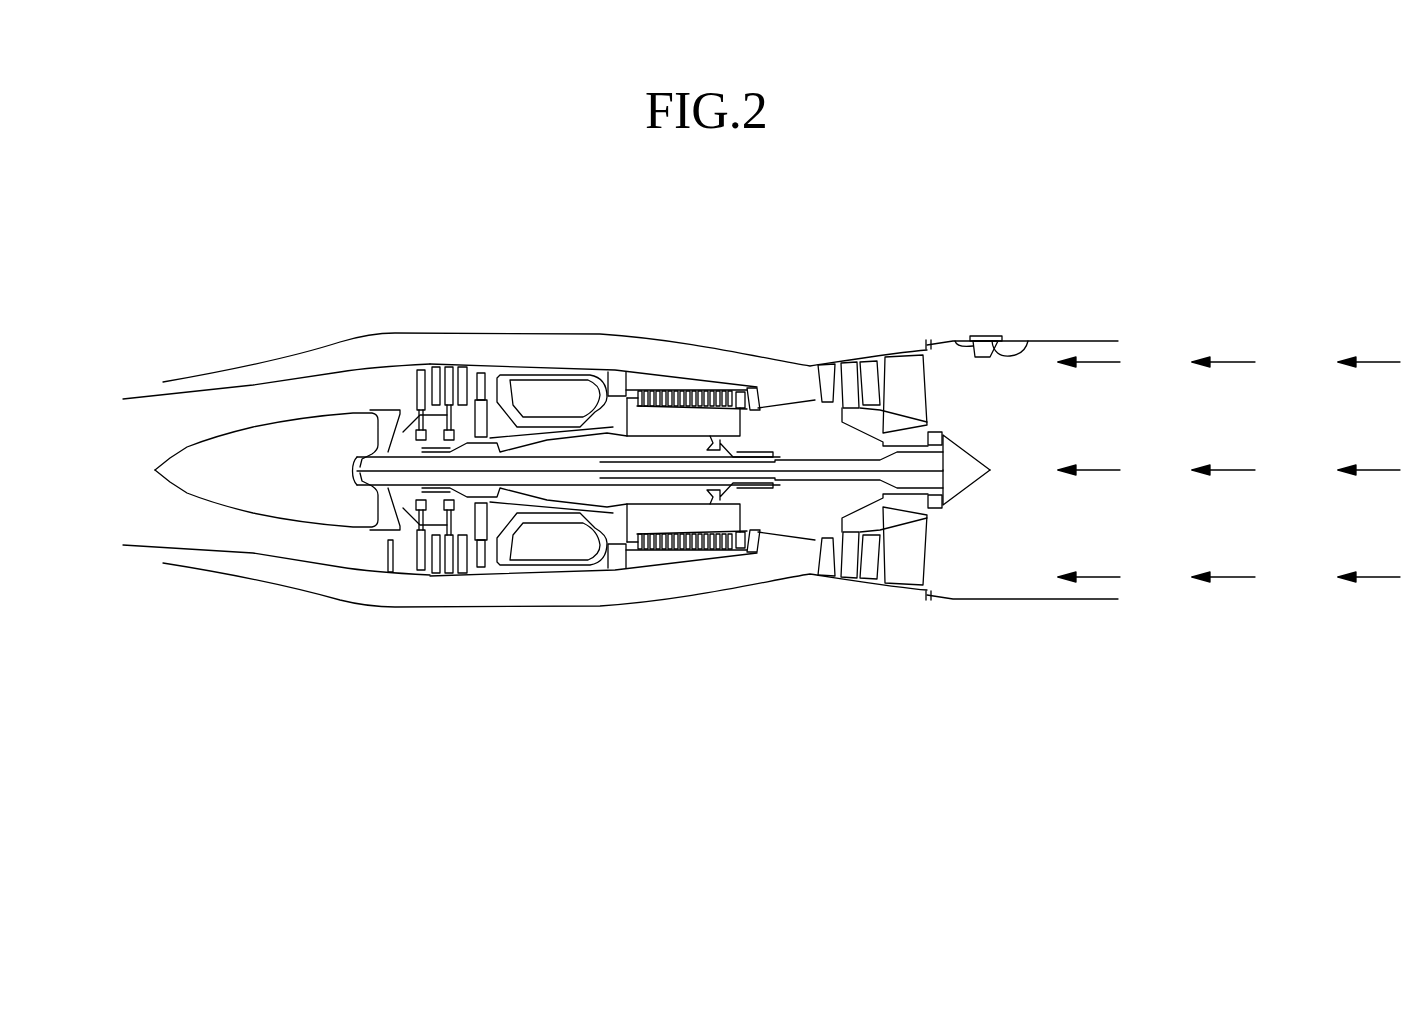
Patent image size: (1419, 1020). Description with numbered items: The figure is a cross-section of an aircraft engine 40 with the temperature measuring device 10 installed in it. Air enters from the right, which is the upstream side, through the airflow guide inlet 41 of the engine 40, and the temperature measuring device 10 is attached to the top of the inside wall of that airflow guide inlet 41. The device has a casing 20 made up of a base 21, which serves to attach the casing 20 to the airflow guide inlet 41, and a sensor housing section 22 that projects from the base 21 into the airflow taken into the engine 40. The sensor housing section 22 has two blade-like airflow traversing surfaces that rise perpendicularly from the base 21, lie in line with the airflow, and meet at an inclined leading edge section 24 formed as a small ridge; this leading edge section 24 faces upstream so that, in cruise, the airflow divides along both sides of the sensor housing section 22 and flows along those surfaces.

The temperature measuring device 10 is at (1003, 318).
The casing 20 is at (1138, 172).
The base 21 is at (995, 336).
The sensor housing section 22 is at (957, 341).
The leading edge section 24 is at (1028, 341).
The engine 40 is at (405, 650).
The airflow guide inlet 41 is at (1123, 622).